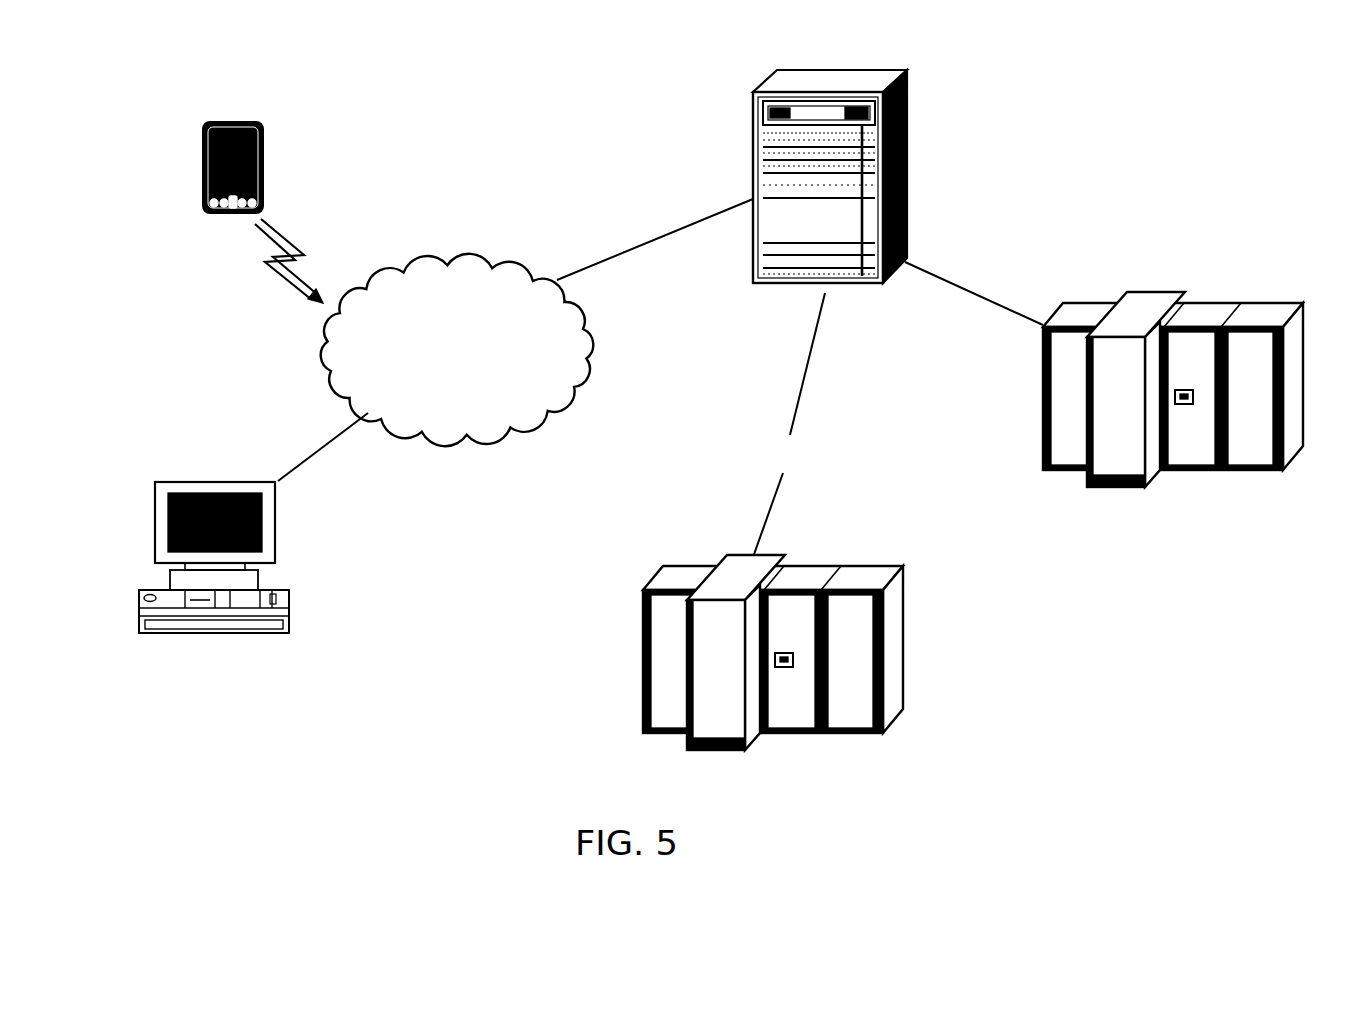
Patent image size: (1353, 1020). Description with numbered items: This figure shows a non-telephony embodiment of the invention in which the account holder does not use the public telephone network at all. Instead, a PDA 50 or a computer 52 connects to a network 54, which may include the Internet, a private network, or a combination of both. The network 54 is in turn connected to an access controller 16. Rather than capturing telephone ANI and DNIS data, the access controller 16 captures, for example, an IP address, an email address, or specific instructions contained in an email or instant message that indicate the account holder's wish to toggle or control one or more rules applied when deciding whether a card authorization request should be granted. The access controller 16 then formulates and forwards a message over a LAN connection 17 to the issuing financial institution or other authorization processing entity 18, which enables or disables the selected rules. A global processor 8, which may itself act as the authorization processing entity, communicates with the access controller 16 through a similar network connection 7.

The PDA 50 is at (259, 122).
The network 54 is at (493, 263).
The computer 52 is at (277, 537).
The access controller 16 is at (908, 90).
The connection 7 is at (972, 296).
The LAN connection 17 is at (804, 388).
The global processor 8 is at (1216, 471).
The authorization processing entity 18 is at (644, 648).